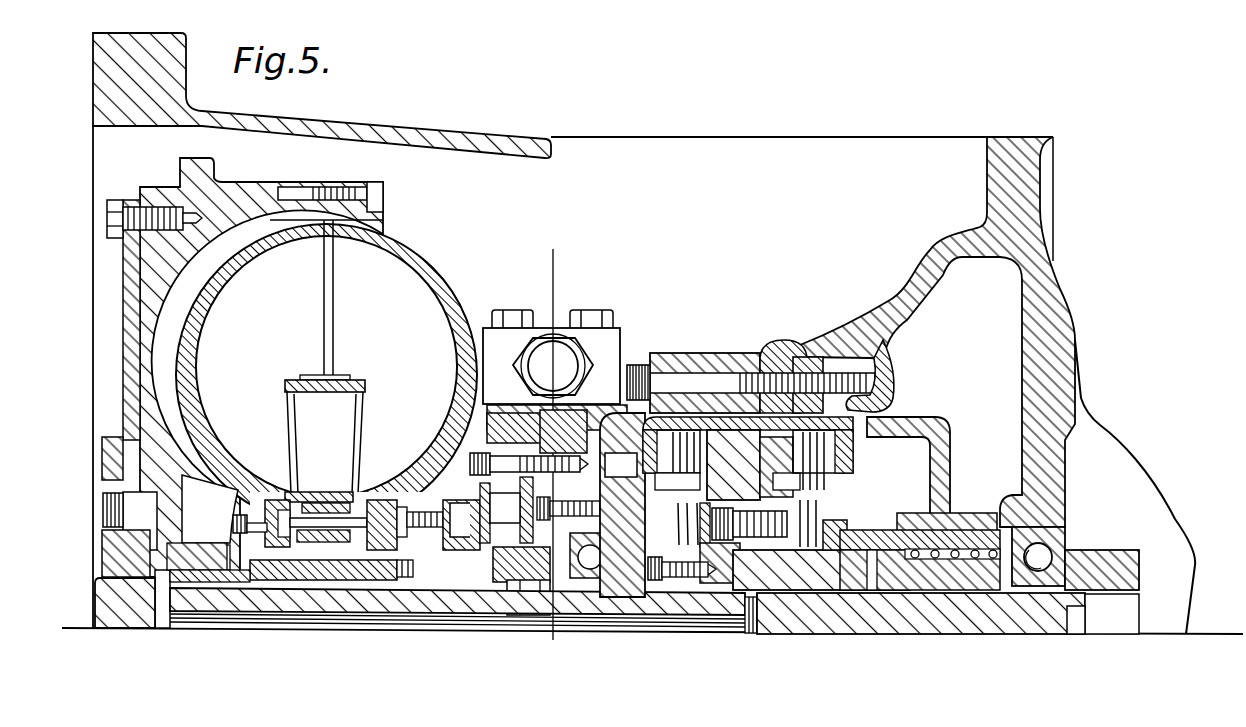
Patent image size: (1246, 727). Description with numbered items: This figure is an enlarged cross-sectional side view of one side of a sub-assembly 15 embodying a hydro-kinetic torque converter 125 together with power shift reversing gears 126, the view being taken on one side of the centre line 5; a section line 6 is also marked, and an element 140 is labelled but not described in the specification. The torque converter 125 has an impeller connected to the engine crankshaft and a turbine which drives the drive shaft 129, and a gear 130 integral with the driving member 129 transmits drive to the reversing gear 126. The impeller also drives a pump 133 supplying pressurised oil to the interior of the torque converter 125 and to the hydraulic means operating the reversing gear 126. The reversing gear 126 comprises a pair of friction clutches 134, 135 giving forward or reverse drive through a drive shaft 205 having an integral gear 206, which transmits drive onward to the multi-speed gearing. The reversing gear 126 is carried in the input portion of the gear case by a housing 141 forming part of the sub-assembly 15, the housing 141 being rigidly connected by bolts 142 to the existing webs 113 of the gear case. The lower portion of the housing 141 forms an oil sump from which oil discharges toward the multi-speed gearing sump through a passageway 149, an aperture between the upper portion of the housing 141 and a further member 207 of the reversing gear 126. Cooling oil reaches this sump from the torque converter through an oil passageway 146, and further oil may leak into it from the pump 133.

The centre line 5 is at (650, 616).
The section line 6- 6 is at (553, 249).
The sub-assembly 15 is at (663, 238).
The webs 113 is at (867, 360).
The hydro-kinetic torque converter 125 is at (463, 267).
The power shift reversing gears 126 is at (707, 352).
The drive shaft 129 is at (202, 597).
The gear 130 is at (620, 463).
The pump 133 is at (507, 503).
The friction clutch 134 is at (705, 455).
The friction clutch 135 is at (823, 458).
The wedge 140 is at (870, 485).
The housing 141 is at (800, 343).
The bolts 142 is at (642, 365).
The oil passageway 146 is at (760, 622).
The passageway 149 is at (890, 413).
The drive shaft 205 is at (940, 597).
The gear 206 is at (1113, 562).
The further member 207 is at (937, 448).